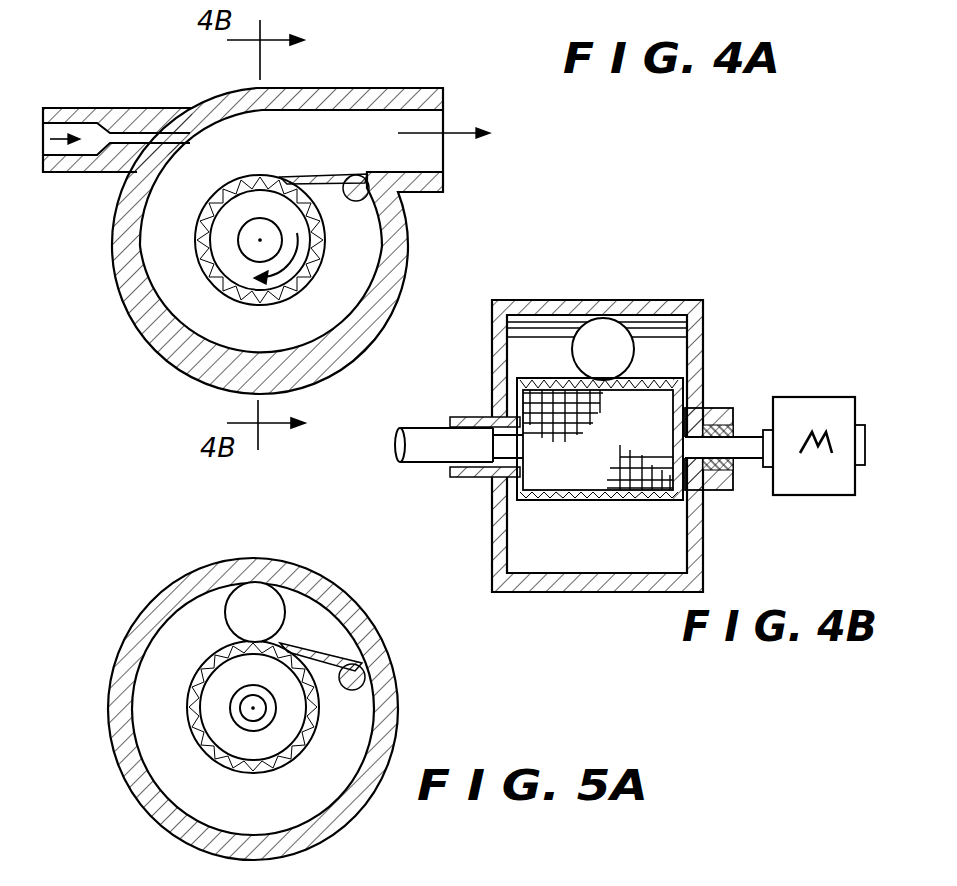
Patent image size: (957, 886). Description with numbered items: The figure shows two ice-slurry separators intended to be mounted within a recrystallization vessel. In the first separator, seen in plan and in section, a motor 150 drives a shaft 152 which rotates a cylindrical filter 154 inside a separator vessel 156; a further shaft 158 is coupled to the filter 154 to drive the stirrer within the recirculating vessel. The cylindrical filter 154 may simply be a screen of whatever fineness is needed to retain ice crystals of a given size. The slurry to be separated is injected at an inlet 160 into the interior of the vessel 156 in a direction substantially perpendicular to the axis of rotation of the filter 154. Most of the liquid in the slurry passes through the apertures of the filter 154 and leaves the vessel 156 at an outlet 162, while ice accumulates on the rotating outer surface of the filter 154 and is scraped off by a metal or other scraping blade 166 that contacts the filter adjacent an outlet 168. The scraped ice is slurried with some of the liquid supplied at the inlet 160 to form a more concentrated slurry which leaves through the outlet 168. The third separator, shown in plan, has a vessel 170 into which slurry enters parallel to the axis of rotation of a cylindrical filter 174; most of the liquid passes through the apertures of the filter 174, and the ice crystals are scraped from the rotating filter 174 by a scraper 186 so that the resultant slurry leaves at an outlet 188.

In FIG. 4B, the motor 150 is at (842, 403).
In FIG. 4B, the shaft 152 is at (752, 443).
In FIG. 4A, the cylindrical filter 154 is at (295, 298).
In FIG. 4B, the cylindrical filter 154 is at (582, 497).
In FIG. 4A, the separator vessel 156 is at (163, 345).
In FIG. 4B, the separator vessel 156 is at (657, 302).
In FIG. 4B, the shaft 158 is at (475, 470).
In FIG. 4A, the inlet 160 is at (83, 107).
In FIG. 4B, the outlet 162 is at (427, 423).
In FIG. 4A, the scraping blade 166 is at (333, 168).
In FIG. 4A, the outlet 168 is at (445, 117).
In FIG. 4B, the outlet 168 is at (590, 333).
In FIG. 5A, the vessel 170 is at (125, 635).
In FIG. 5A, the cylindrical filter 174 is at (193, 740).
In FIG. 5A, the scraper 186 is at (345, 642).
In FIG. 5A, the outlet 188 is at (268, 602).